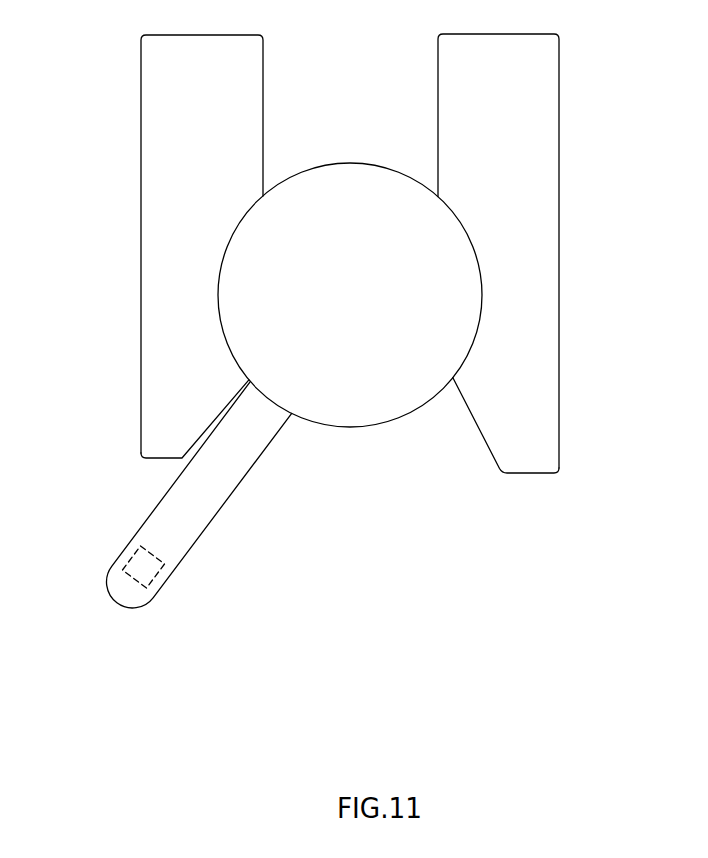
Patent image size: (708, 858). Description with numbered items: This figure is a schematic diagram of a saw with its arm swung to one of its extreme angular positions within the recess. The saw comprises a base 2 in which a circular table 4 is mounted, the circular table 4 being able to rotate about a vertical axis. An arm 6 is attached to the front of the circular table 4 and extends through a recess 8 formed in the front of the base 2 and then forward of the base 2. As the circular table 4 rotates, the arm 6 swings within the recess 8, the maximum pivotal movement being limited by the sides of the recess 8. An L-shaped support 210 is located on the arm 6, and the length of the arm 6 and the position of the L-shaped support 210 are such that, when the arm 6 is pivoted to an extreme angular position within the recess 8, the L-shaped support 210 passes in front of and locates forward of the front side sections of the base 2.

The base 2 is at (145, 252).
The circular table 4 is at (360, 215).
The arm 6 is at (199, 521).
The recess 8 is at (550, 308).
The L-shaped support 210 is at (143, 573).